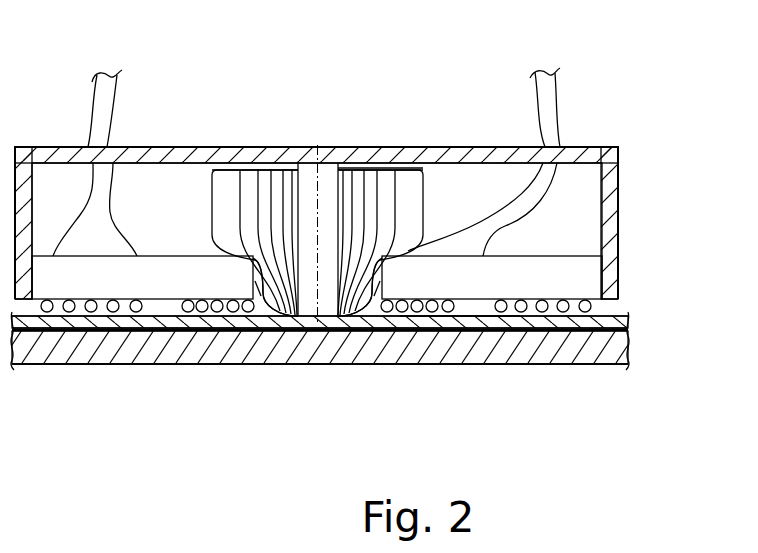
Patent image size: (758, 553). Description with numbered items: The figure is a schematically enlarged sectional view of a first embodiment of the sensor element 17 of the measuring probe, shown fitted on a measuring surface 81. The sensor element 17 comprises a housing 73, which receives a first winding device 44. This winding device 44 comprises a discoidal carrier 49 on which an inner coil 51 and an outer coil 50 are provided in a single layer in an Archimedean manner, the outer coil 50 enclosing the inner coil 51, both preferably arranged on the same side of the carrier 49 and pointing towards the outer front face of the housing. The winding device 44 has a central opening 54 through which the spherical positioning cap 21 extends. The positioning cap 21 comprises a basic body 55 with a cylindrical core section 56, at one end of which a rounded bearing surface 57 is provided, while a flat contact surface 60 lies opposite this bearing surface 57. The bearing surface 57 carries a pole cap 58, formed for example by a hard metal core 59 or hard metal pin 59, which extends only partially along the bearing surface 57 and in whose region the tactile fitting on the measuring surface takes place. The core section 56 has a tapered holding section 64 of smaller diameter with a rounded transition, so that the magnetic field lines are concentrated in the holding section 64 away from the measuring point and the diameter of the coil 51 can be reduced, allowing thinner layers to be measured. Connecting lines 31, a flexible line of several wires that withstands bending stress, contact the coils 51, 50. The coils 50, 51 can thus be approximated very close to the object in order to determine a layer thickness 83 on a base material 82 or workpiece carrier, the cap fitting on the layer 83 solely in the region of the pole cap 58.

The sensor element 17 is at (242, 110).
The spherical positioning cap 21 is at (195, 171).
The flexible line 31 is at (100, 100).
The first winding device 44 is at (156, 318).
The discoidal carrier 49 is at (592, 280).
The outer coil 50 is at (538, 329).
The inner coil 51 is at (462, 316).
The central opening 54 is at (373, 300).
The basic body 55 is at (237, 197).
The cylindrical core section 56 is at (425, 208).
The rounded bearing surface 57 is at (360, 314).
The pole cap 58 is at (312, 314).
The hard metal core 59 is at (310, 185).
The flat contact surface 60 is at (364, 167).
The tapered holding section 64 is at (262, 298).
The housing 73 is at (573, 154).
The measuring surface 81 is at (622, 384).
The base material 82 is at (613, 346).
The layer thickness 83 is at (625, 323).